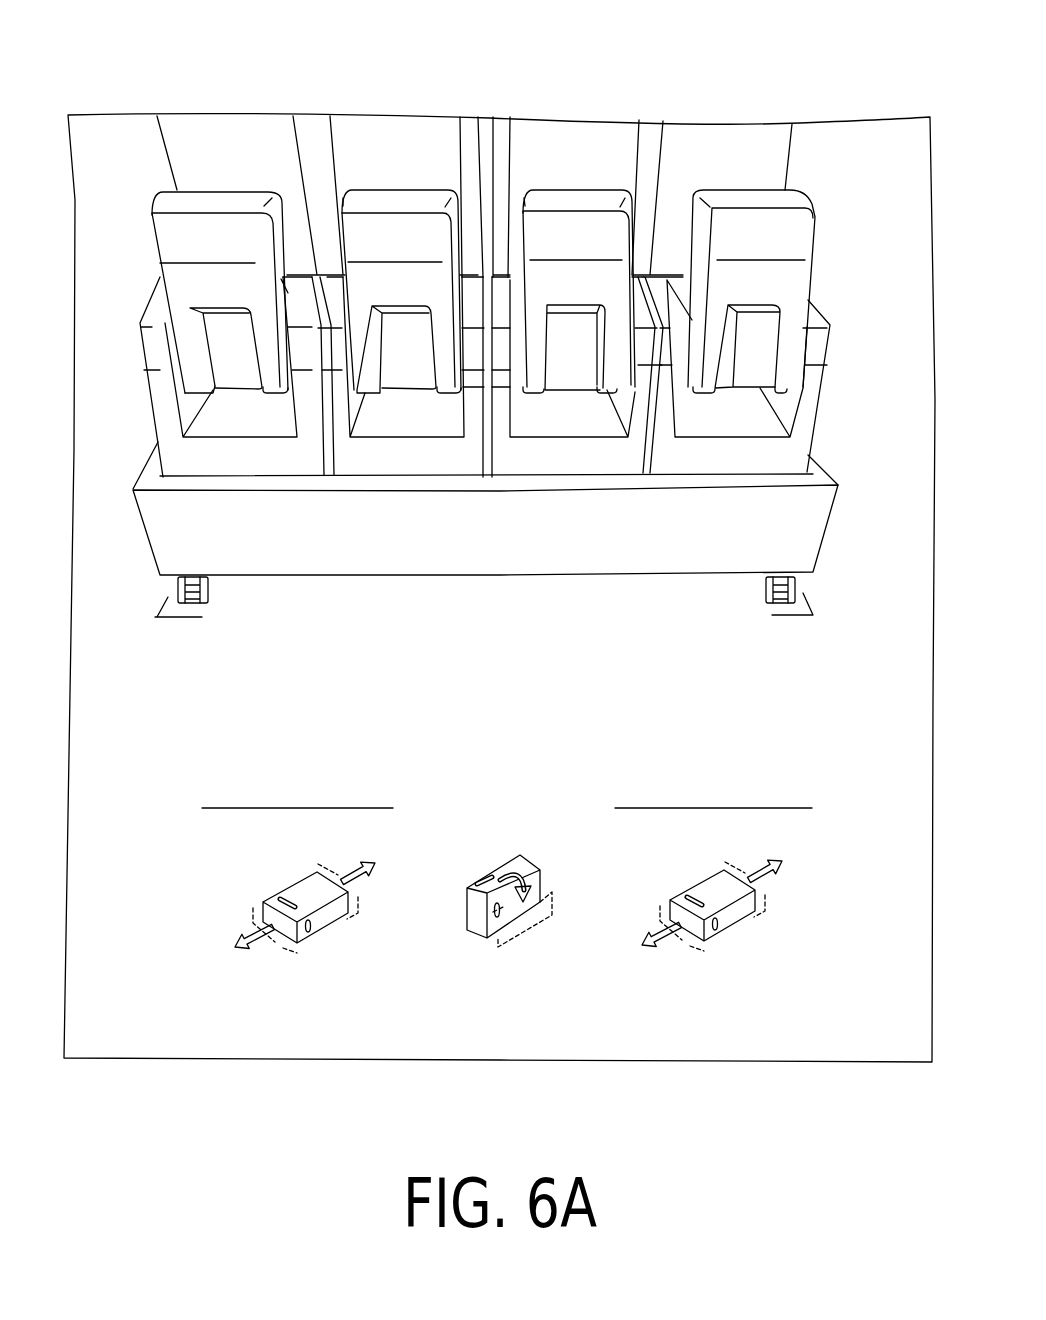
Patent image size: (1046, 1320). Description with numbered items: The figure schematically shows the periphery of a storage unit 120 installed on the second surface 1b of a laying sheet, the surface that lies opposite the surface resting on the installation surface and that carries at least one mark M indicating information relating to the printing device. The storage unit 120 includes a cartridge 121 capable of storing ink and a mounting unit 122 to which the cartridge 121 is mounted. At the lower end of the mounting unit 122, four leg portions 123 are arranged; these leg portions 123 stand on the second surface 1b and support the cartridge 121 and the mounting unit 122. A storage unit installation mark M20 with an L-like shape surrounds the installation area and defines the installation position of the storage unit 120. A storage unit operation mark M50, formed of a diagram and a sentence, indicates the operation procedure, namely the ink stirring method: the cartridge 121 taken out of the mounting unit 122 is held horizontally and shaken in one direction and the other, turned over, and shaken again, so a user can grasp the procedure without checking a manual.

The second surface 1b is at (153, 1037).
The storage unit 120 is at (524, 315).
The cartridge 121 is at (730, 142).
The mounting unit 122 is at (808, 414).
The leg portions 123 is at (209, 592).
The mark M is at (501, 812).
The storage unit installation mark M20 is at (180, 619).
The storage unit operation mark M50 is at (703, 775).